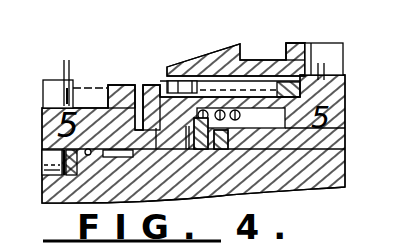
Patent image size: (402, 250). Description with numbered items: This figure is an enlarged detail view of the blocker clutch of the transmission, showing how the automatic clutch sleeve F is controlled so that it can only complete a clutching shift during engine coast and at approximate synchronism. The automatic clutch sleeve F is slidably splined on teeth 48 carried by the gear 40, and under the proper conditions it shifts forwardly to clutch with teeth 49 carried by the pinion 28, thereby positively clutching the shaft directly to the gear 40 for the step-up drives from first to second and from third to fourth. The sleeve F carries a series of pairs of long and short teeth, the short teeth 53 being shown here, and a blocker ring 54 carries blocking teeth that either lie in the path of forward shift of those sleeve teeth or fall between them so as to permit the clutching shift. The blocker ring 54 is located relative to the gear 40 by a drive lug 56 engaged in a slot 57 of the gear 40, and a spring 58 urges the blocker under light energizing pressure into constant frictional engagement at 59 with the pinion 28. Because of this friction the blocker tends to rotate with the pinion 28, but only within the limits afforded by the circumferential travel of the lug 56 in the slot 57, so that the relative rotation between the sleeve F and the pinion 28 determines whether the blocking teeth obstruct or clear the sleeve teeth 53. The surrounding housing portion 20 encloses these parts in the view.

The valve housing 20 is at (330, 163).
The pinion 28 is at (47, 86).
The gear 40 is at (323, 45).
The teeth 48 is at (294, 45).
The teeth 49 is at (117, 88).
The short teeth 53 is at (148, 88).
The blocker ring 54 is at (86, 155).
The drive lug 56 is at (171, 106).
The slot 57 is at (186, 95).
The spring 58 is at (242, 115).
The frictional engagement 59 is at (152, 152).
The automatic clutch sleeve F is at (208, 65).